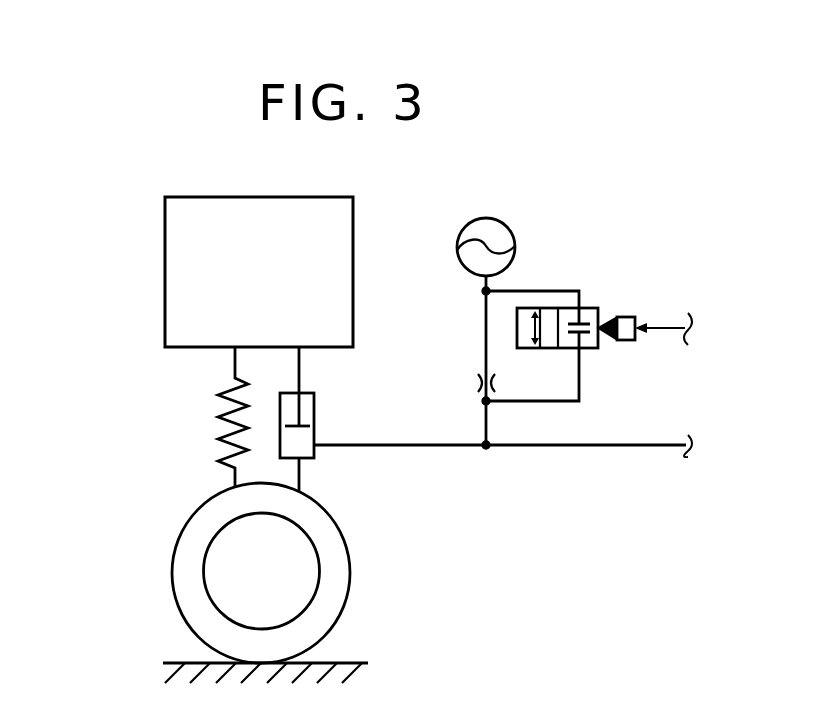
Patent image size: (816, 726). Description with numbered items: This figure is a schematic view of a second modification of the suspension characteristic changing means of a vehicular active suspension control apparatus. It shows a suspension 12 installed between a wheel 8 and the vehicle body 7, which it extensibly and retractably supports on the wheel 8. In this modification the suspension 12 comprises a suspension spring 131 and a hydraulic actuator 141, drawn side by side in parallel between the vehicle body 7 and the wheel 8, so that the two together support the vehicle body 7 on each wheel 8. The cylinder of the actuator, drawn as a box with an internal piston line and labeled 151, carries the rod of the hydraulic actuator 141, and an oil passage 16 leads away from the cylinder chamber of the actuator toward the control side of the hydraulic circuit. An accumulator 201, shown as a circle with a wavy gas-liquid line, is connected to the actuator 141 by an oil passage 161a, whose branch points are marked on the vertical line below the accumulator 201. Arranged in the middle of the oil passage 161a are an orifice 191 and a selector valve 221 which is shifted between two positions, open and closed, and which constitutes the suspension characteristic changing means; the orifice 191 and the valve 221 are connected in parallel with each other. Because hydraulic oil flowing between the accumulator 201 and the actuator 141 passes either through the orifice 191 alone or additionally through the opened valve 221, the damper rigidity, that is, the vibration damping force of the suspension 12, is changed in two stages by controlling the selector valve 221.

The vehicle body 7 is at (165, 222).
The suspension 12 is at (130, 366).
The suspension spring 131 is at (228, 408).
The damper cylinder 151 is at (312, 430).
The hydraulic actuator 141 is at (303, 458).
The wheel 8 is at (176, 532).
The oil passage 16 is at (594, 448).
The oil passage 161a is at (482, 291).
The orifice 191 is at (477, 376).
The accumulator 201 is at (513, 237).
The selector valve 221 is at (590, 308).